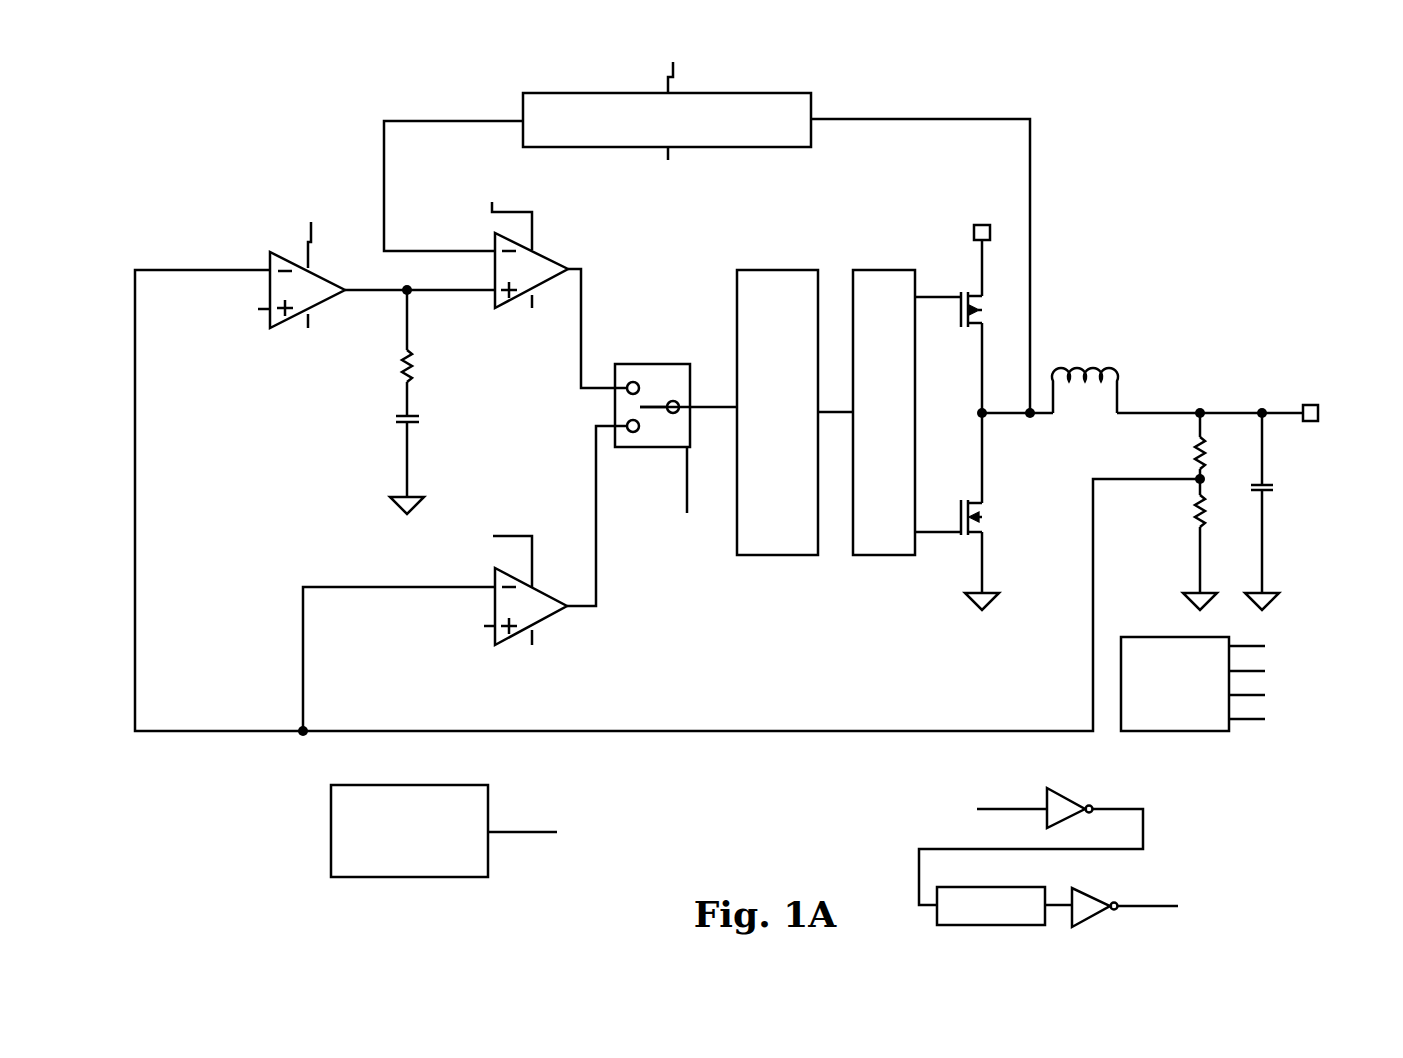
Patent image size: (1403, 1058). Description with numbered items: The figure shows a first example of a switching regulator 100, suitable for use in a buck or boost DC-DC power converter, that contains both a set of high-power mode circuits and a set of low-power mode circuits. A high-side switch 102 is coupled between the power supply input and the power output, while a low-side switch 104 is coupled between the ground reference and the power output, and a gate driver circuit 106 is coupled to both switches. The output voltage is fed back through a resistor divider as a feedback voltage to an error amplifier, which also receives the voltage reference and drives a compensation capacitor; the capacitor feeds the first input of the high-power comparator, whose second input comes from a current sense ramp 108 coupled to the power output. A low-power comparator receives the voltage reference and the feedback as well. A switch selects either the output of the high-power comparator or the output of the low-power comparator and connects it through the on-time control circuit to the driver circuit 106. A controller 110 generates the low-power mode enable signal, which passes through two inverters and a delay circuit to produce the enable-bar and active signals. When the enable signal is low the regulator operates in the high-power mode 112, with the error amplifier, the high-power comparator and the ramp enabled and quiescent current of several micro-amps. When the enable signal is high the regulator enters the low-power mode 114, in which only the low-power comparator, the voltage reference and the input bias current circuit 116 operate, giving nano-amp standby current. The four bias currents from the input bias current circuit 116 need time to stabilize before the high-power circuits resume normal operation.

The switching regulator 100 is at (236, 88).
The high-side switch 102 is at (948, 294).
The low-side switch 104 is at (948, 534).
The gate driver circuit 106 is at (826, 412).
The current sense ramp 108 is at (667, 120).
The controller 110 is at (444, 831).
The high-power mode 112 is at (629, 358).
The low-power mode 114 is at (623, 513).
The input bias (IB) current circuit 116 is at (1208, 684).